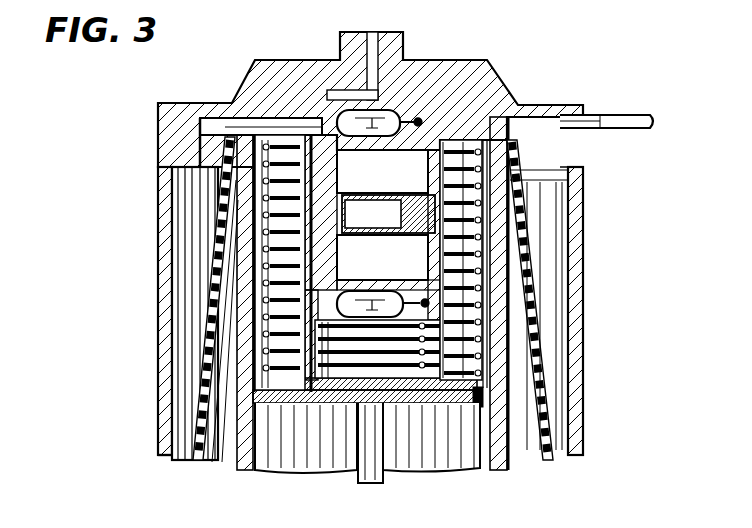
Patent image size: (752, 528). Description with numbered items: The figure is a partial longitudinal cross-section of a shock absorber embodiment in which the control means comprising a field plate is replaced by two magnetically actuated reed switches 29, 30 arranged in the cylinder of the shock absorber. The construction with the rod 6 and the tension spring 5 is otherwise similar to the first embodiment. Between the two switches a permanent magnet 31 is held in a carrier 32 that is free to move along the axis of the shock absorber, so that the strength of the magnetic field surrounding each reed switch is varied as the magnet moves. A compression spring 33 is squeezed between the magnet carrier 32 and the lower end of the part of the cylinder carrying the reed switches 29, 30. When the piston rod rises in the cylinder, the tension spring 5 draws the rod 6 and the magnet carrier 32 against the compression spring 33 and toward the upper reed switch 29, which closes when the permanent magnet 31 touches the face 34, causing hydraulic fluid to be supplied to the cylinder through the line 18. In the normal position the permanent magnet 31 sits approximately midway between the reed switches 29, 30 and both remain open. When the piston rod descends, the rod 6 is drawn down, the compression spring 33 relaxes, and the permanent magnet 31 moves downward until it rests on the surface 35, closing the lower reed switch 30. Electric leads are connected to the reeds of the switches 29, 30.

The reed switch 29 is at (362, 120).
The line 18 is at (598, 117).
The face 34 is at (378, 150).
The permanent magnet 31 is at (388, 206).
The surface 35 is at (387, 335).
The carrier 32 is at (480, 250).
The tension spring 5 is at (482, 303).
The compression spring 33 is at (353, 342).
The reed switch 30 is at (397, 342).
The rod 6 is at (383, 481).